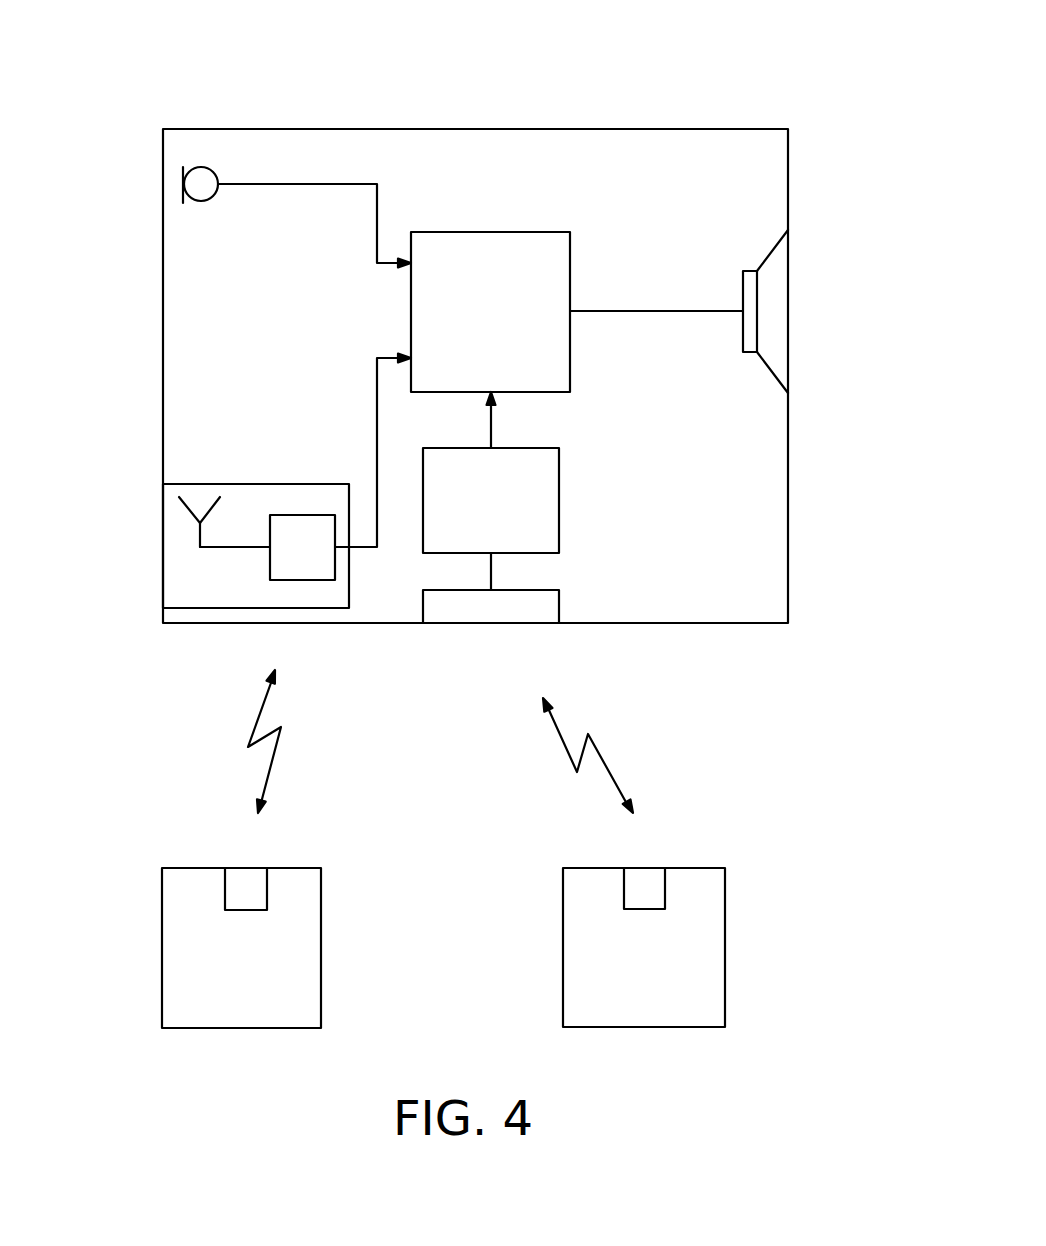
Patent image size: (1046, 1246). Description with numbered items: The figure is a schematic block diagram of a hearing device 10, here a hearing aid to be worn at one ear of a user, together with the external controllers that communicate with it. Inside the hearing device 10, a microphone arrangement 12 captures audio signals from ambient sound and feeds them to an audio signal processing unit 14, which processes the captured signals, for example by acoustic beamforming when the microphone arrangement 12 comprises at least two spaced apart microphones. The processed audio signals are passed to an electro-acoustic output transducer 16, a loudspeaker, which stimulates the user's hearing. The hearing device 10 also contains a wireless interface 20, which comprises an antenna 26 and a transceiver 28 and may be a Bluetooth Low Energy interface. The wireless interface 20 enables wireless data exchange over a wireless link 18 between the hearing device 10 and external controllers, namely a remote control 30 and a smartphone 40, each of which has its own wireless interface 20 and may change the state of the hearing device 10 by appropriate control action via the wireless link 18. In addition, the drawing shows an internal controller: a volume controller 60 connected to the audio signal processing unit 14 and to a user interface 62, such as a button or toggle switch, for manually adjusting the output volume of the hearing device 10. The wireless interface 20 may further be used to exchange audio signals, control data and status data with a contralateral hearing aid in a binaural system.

The hearing device 10 is at (695, 122).
The microphone arrangement 12 is at (190, 188).
The audio signal processing unit 14 is at (490, 312).
The electro-acoustic output transducer 16 is at (772, 296).
The wireless link 18 is at (277, 752).
The wireless interface 20 is at (220, 608).
The antenna 26 is at (182, 517).
The transceiver 28 is at (340, 467).
The remote control 30 is at (244, 1044).
The smartphone 40 is at (656, 1043).
The volume controller 60 is at (491, 472).
The user interface 62 is at (491, 608).